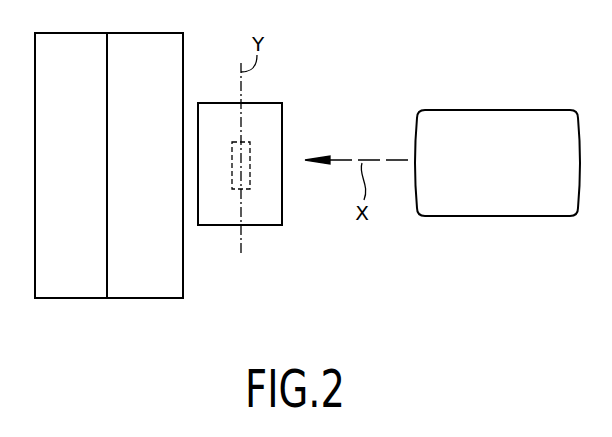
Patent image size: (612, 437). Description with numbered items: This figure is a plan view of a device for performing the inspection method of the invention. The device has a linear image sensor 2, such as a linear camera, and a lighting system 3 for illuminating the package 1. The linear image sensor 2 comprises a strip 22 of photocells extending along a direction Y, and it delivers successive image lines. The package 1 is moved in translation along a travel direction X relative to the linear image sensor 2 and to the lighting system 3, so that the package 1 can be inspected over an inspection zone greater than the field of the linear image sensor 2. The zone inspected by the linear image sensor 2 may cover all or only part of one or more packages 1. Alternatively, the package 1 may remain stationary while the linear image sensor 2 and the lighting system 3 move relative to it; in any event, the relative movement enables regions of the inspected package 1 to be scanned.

The package 1 is at (505, 125).
The linear image sensor 2 is at (284, 227).
The strip of photocells 22 is at (250, 150).
The lighting system 3 is at (122, 293).